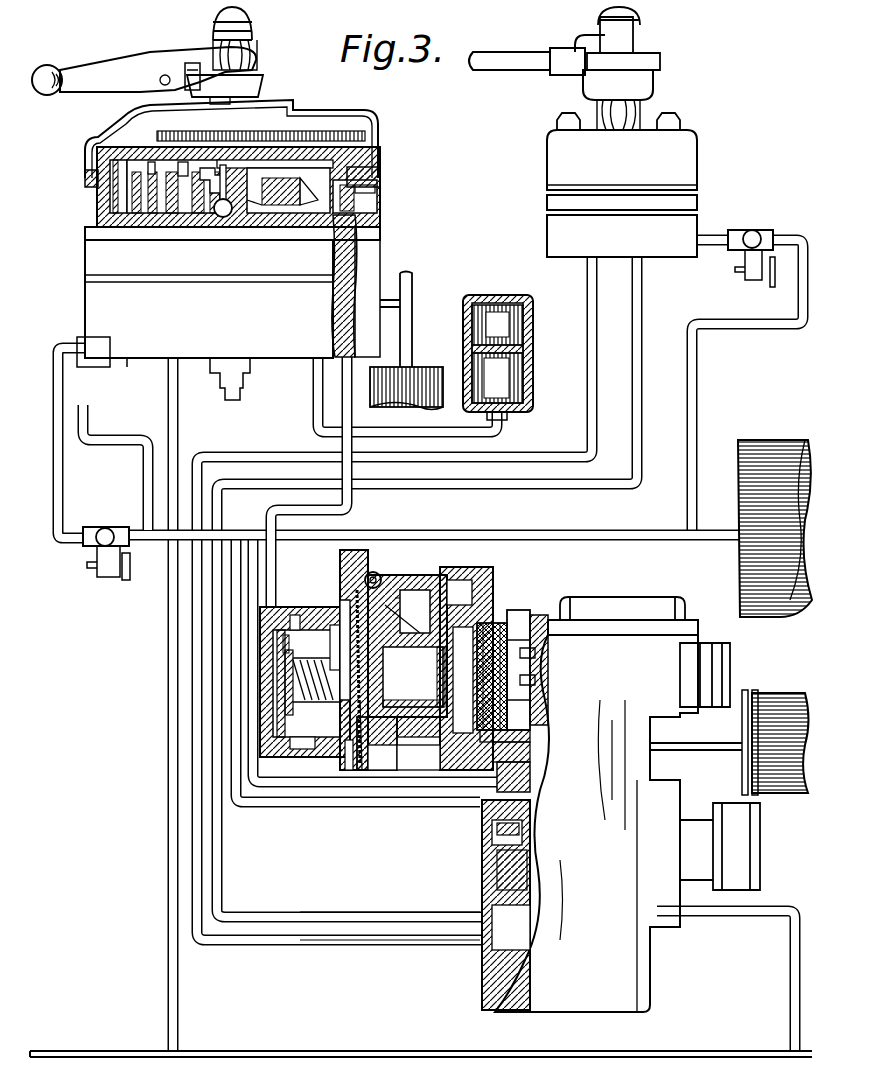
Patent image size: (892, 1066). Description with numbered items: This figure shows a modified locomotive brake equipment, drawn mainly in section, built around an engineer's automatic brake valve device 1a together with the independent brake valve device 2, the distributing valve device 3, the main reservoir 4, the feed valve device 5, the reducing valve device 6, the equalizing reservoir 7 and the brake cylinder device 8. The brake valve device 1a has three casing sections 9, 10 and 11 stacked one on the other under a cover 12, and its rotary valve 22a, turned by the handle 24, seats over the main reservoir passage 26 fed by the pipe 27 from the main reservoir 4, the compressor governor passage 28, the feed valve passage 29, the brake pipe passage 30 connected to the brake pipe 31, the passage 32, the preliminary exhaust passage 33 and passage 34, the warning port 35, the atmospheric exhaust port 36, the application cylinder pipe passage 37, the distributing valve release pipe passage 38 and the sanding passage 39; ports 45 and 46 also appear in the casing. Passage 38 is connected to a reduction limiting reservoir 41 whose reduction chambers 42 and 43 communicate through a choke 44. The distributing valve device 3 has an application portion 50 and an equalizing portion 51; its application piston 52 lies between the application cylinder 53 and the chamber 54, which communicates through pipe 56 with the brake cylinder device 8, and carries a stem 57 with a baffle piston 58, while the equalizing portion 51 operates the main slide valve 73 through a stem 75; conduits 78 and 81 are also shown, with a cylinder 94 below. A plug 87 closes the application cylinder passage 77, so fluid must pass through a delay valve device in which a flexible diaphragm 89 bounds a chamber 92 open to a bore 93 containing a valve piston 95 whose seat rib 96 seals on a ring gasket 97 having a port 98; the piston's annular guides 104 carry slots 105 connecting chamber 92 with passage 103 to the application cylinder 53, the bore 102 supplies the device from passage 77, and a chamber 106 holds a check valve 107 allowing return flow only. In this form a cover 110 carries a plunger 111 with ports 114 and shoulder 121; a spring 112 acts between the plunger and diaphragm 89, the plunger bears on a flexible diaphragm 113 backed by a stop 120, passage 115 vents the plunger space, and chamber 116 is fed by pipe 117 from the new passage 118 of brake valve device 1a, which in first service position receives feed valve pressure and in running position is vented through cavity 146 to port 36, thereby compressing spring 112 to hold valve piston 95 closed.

The automatic brake valve device 1a is at (303, 108).
The independent brake valve device 2 is at (680, 143).
The distributing valve device 3 is at (652, 612).
The main reservoir 4 is at (752, 442).
The feed valve device 5 is at (106, 530).
The reducing valve device 6 is at (752, 232).
The equalizing reservoir 7 is at (420, 380).
The brake cylinder device 8 is at (762, 700).
The casing section 9 is at (90, 328).
The casing section 10 is at (85, 255).
The casing section 11 is at (95, 198).
The cover 12 is at (115, 132).
The rotary valve 22a is at (330, 138).
The control lever 24 is at (75, 70).
The main reservoir passage 26 is at (90, 183).
The pipe 27 is at (130, 440).
The passage 28 is at (120, 200).
The feed valve passage 29 is at (138, 225).
The brake pipe passage 30 is at (153, 225).
The brake pipe 31 is at (443, 1050).
The passage 32 is at (172, 225).
The preliminary exhaust passage 33 is at (198, 225).
The passage 34 is at (215, 222).
The warning port 35 is at (210, 167).
The atmospheric exhaust port 36 is at (228, 198).
The application cylinder pipe passage 37 is at (288, 190).
The distributing valve release pipe passage 38 is at (362, 196).
The sanding passage 39 is at (365, 183).
The reduction limiting reservoir 41 is at (525, 352).
The reduction chamber 42 is at (505, 388).
The reduction chamber 43 is at (515, 320).
The choke 44 is at (500, 348).
The port 45 is at (152, 165).
The port 46 is at (183, 165).
The application portion 50 is at (600, 612).
The equalizing portion 51 is at (655, 975).
The application piston 52 is at (520, 612).
The application cylinder 53 is at (492, 620).
The chamber 54 is at (540, 615).
The pipe 56 is at (685, 748).
The stem 57 is at (533, 683).
The baffle piston 58 is at (532, 655).
The main slide valve 73 is at (525, 860).
The stem 75 is at (515, 832).
The application cylinder passage 77 is at (515, 755).
The conduit 78 is at (372, 917).
The conduit 81 is at (400, 945).
The plug 87 is at (520, 737).
The flexible diaphragm 89 is at (394, 761).
The chamber 92 is at (365, 775).
The bore 93 is at (422, 733).
The pump cylinder 94 is at (480, 965).
The valve piston 95 is at (388, 743).
The annular seat rib 96 is at (428, 658).
The ring gasket 97 is at (422, 761).
The port 98 is at (448, 678).
The bore 102 is at (512, 780).
The passage 103 is at (470, 585).
The annular guide 104 is at (430, 715).
The slot 105 is at (411, 606).
The chamber 106 is at (378, 575).
The check valve 107 is at (425, 580).
The cover 110 is at (345, 580).
The plunger 111 is at (307, 757).
The spring 112 is at (355, 745).
The flexible diaphragm 113 is at (288, 715).
The port 114 is at (316, 680).
The passage 115 is at (335, 628).
The chamber 116 is at (292, 625).
The pipe 117 is at (272, 520).
The passage 118 is at (345, 262).
The stop 120 is at (262, 684).
The shoulder 121 is at (278, 705).
The cavity 146 is at (372, 152).